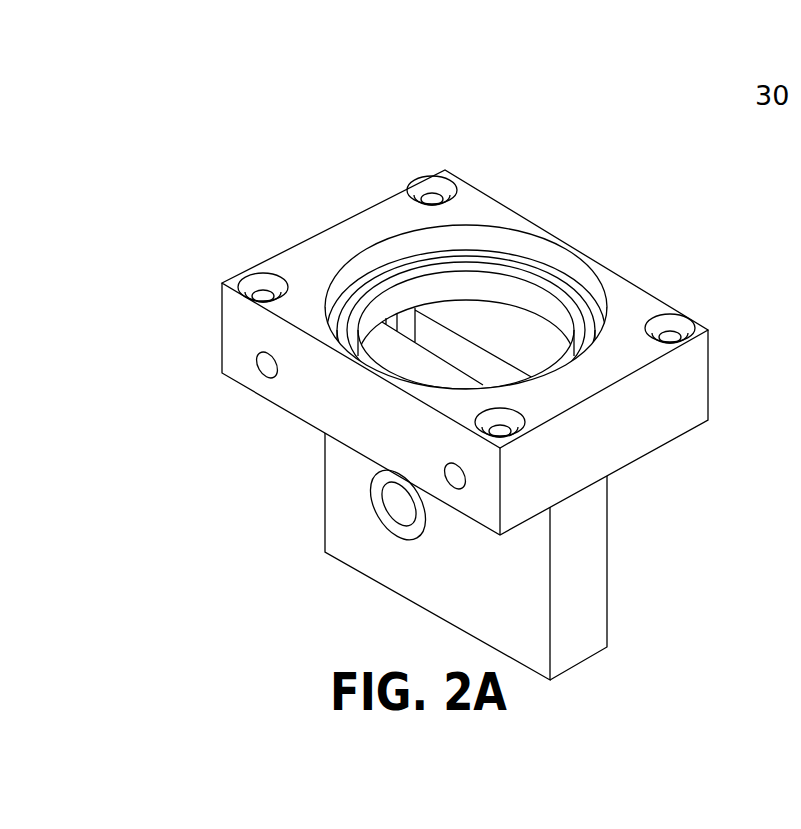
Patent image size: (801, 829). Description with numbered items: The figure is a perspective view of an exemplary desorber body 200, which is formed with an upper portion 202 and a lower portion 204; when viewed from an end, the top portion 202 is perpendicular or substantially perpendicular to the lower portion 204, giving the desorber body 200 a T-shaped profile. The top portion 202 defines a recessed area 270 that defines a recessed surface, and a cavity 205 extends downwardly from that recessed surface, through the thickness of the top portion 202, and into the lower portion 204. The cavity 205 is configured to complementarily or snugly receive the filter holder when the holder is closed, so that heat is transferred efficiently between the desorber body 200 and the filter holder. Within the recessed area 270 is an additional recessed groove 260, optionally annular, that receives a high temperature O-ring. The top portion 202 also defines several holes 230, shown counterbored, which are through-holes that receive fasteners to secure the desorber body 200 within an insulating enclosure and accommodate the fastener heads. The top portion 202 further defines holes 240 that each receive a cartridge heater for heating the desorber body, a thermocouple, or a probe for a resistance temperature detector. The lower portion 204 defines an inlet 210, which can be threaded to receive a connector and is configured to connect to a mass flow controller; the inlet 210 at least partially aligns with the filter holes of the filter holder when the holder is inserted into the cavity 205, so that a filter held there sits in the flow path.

The desorber body 200 is at (312, 130).
The upper portion 202 is at (318, 227).
The lower portion 204 is at (457, 600).
The cavity 205 is at (458, 353).
The inlet 210 is at (388, 518).
The holes 230 is at (423, 180).
The holes 240 is at (262, 372).
The recessed groove 260 is at (565, 297).
The recessed area 270 is at (537, 355).